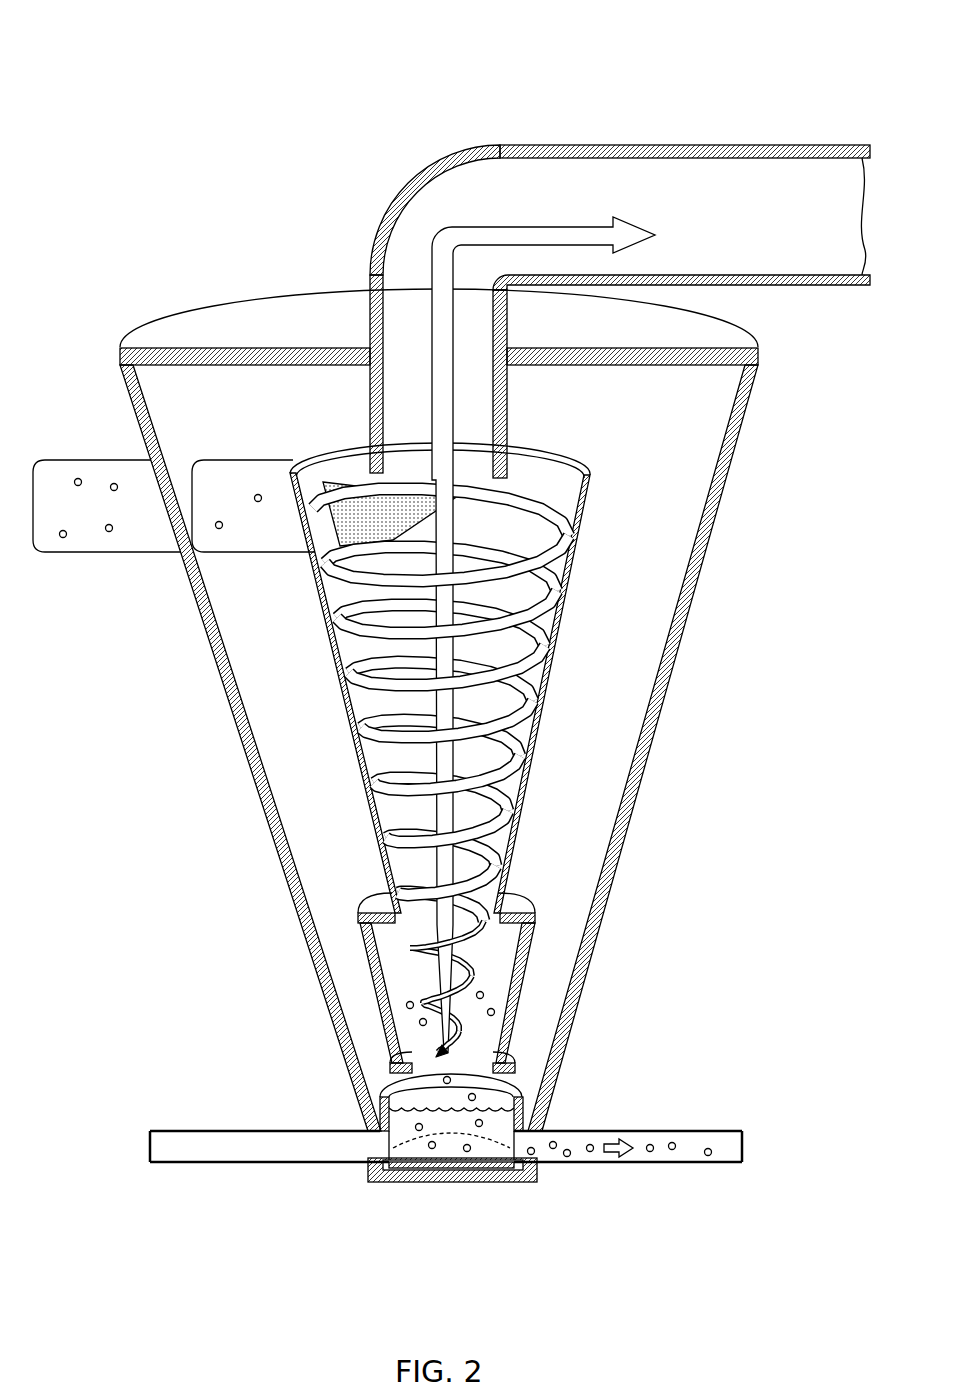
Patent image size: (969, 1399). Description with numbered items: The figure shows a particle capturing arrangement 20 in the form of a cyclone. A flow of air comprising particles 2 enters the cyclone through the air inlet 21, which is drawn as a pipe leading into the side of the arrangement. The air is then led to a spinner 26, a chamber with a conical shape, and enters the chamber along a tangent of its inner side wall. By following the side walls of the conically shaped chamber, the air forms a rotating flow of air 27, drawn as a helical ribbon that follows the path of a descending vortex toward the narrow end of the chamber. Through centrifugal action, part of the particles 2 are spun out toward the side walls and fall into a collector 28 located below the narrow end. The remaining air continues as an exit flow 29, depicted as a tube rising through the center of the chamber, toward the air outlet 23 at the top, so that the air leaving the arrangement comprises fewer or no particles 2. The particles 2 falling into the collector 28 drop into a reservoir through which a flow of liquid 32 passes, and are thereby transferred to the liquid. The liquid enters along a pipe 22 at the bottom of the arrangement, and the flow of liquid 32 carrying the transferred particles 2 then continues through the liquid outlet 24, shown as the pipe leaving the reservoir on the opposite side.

The particle capturing arrangement 20 is at (571, 100).
The particles 2 is at (77, 479).
The air inlet 21 is at (106, 458).
The liquid inlet pipe 22 is at (253, 1164).
The air outlet 23 is at (822, 148).
The liquid outlet 24 is at (700, 1165).
The spinner 26 is at (618, 505).
The rotating flow of air 27 is at (345, 630).
The collector 28 is at (532, 1069).
The exit flow 29 is at (428, 280).
The flow of liquid 32 is at (612, 1160).